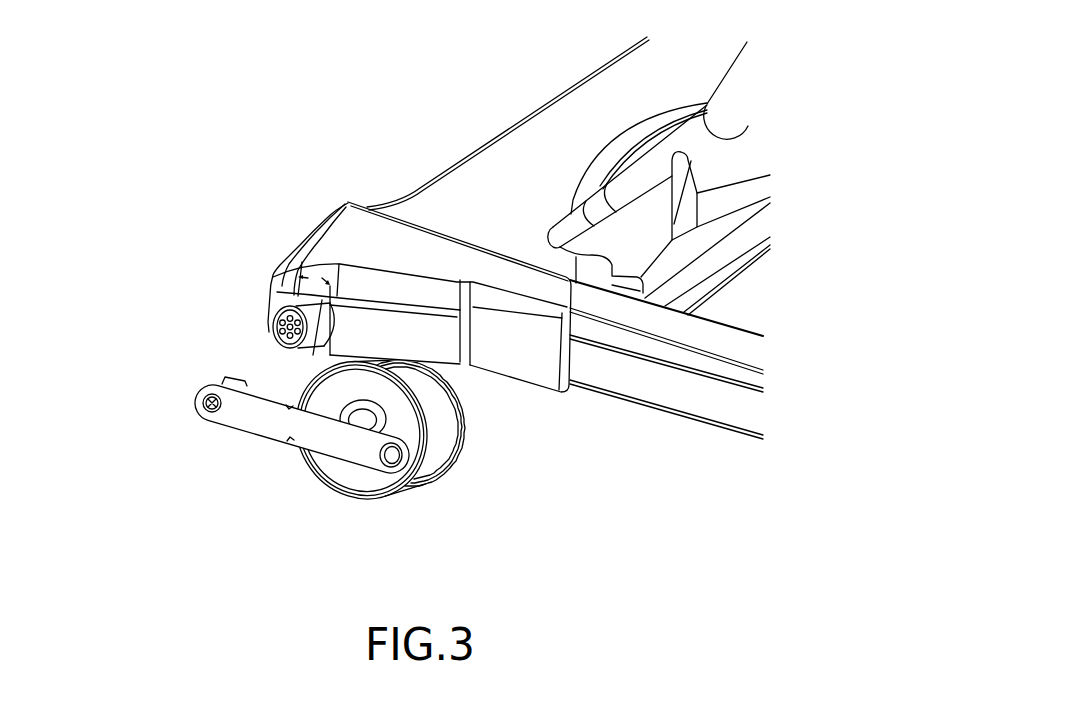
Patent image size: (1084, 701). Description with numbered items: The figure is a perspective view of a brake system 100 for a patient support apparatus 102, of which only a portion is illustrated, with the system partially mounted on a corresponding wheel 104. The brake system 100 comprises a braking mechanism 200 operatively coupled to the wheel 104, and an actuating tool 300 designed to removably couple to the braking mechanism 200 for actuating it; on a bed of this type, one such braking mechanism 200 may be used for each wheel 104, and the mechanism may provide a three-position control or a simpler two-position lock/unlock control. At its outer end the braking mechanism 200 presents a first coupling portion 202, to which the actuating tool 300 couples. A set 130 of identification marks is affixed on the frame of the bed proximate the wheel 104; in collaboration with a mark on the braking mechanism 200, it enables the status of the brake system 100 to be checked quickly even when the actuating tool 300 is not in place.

The brake system 100 is at (146, 216).
The patient support apparatus 102 is at (561, 82).
The wheel 104 is at (380, 484).
The set of identification marks 130 is at (315, 262).
The braking mechanism 200 is at (258, 275).
The first coupling portion 202 is at (258, 311).
The actuating tool 300 is at (196, 376).